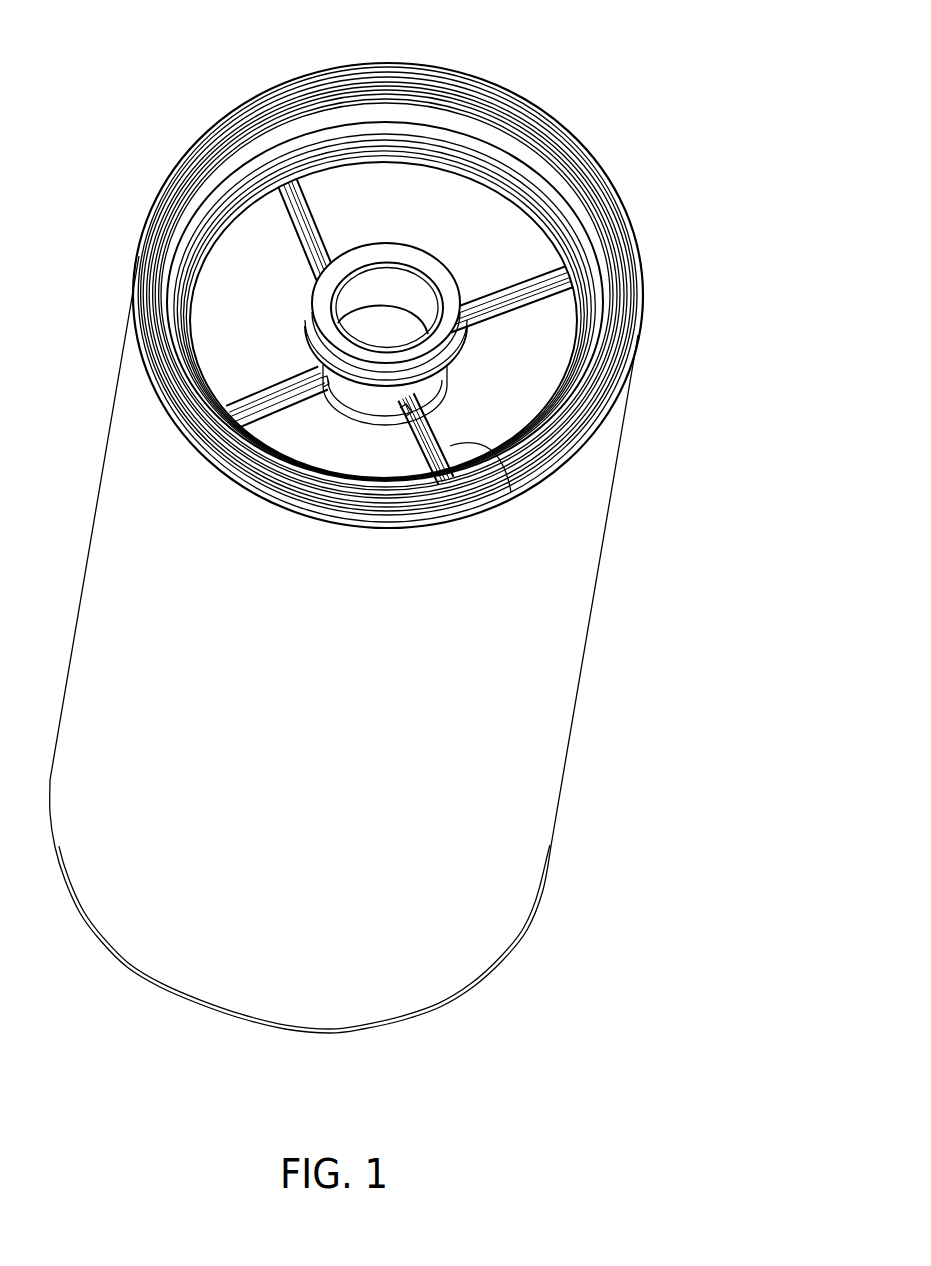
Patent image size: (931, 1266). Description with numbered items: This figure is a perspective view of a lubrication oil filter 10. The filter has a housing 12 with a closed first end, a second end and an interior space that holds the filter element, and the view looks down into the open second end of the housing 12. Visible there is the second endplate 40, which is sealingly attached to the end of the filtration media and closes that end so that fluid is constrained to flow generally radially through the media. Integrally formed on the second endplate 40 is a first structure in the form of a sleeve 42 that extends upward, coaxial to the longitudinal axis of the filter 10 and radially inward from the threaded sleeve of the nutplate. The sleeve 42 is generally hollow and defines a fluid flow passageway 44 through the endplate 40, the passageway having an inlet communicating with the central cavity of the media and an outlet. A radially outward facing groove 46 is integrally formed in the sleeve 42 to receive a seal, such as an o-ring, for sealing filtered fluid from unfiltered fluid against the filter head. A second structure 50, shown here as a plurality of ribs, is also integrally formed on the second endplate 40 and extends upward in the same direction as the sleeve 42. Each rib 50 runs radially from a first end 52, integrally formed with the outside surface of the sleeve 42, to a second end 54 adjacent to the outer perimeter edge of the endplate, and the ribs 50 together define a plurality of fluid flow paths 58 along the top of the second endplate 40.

The lubrication oil filter 10 is at (391, 524).
The housing 12 is at (568, 538).
The second endplate 40 is at (237, 283).
The first structure (sleeve) 42 is at (365, 395).
The fluid flow passageway 44 is at (387, 332).
The radial outward facing groove 46 is at (455, 352).
The second structure (ribs) 50 is at (317, 213).
The first end of rib 52 is at (330, 390).
The second end of rib 54 is at (560, 265).
The fluid flow paths 58 is at (415, 203).